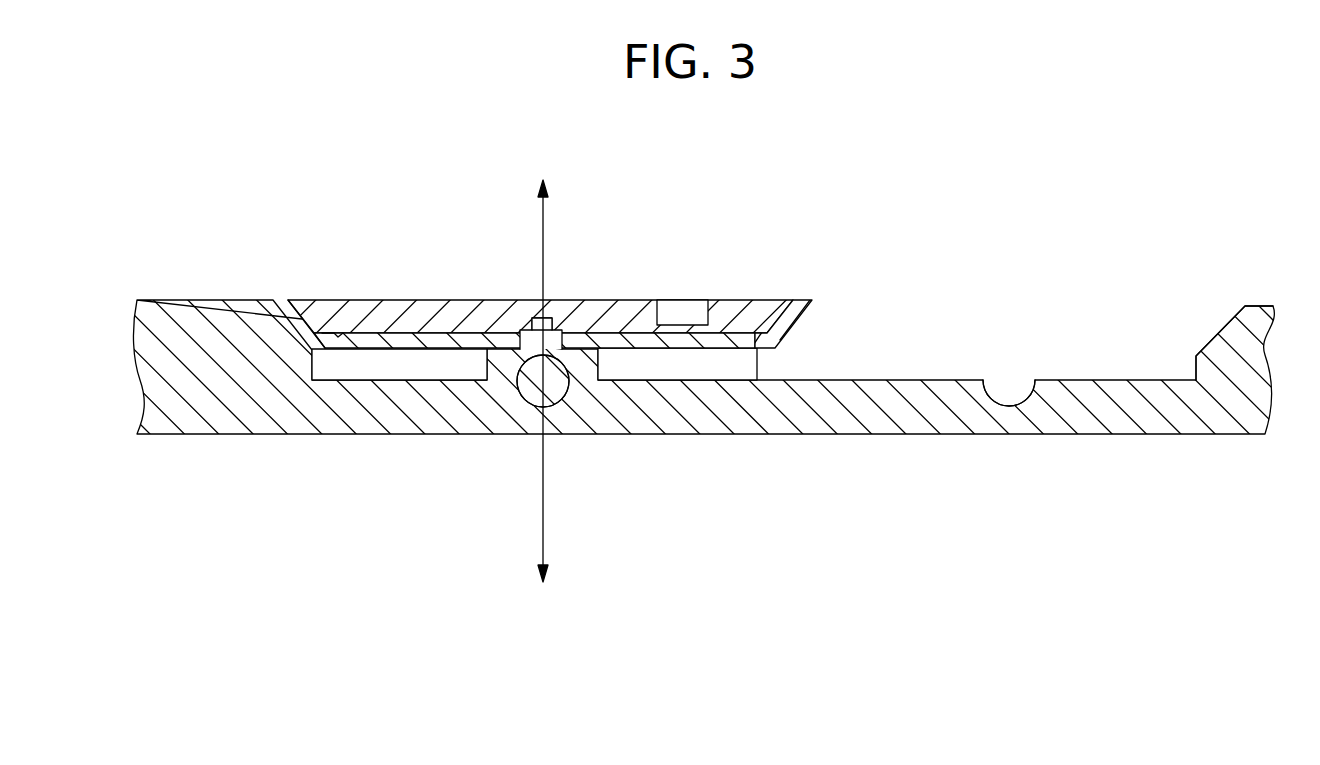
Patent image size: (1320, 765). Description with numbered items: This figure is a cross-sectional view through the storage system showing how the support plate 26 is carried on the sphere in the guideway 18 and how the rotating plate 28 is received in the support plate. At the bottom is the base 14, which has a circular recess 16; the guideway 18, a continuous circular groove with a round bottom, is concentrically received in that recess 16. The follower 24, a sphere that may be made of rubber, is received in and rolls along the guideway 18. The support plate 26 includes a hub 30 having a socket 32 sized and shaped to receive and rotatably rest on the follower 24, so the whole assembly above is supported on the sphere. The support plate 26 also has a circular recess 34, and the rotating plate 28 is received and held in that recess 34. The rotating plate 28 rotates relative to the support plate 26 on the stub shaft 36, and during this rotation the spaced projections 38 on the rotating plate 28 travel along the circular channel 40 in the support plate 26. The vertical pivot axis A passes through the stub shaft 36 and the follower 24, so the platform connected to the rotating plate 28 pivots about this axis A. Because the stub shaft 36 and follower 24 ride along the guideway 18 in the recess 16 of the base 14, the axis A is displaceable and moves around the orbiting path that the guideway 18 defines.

The base 14 is at (238, 402).
The circular recess 16 is at (1123, 380).
The guideway 18 is at (1009, 405).
The follower 24 is at (560, 400).
The support plate 26 is at (787, 322).
The rotating plate 28 is at (748, 302).
The hub 30 is at (497, 368).
The socket 32 is at (553, 395).
The circular recess 34 is at (393, 331).
The stub shaft 36 is at (535, 325).
The spaced projections 38 is at (336, 338).
The circular channel 40 is at (758, 349).
The pivot axis A is at (543, 230).